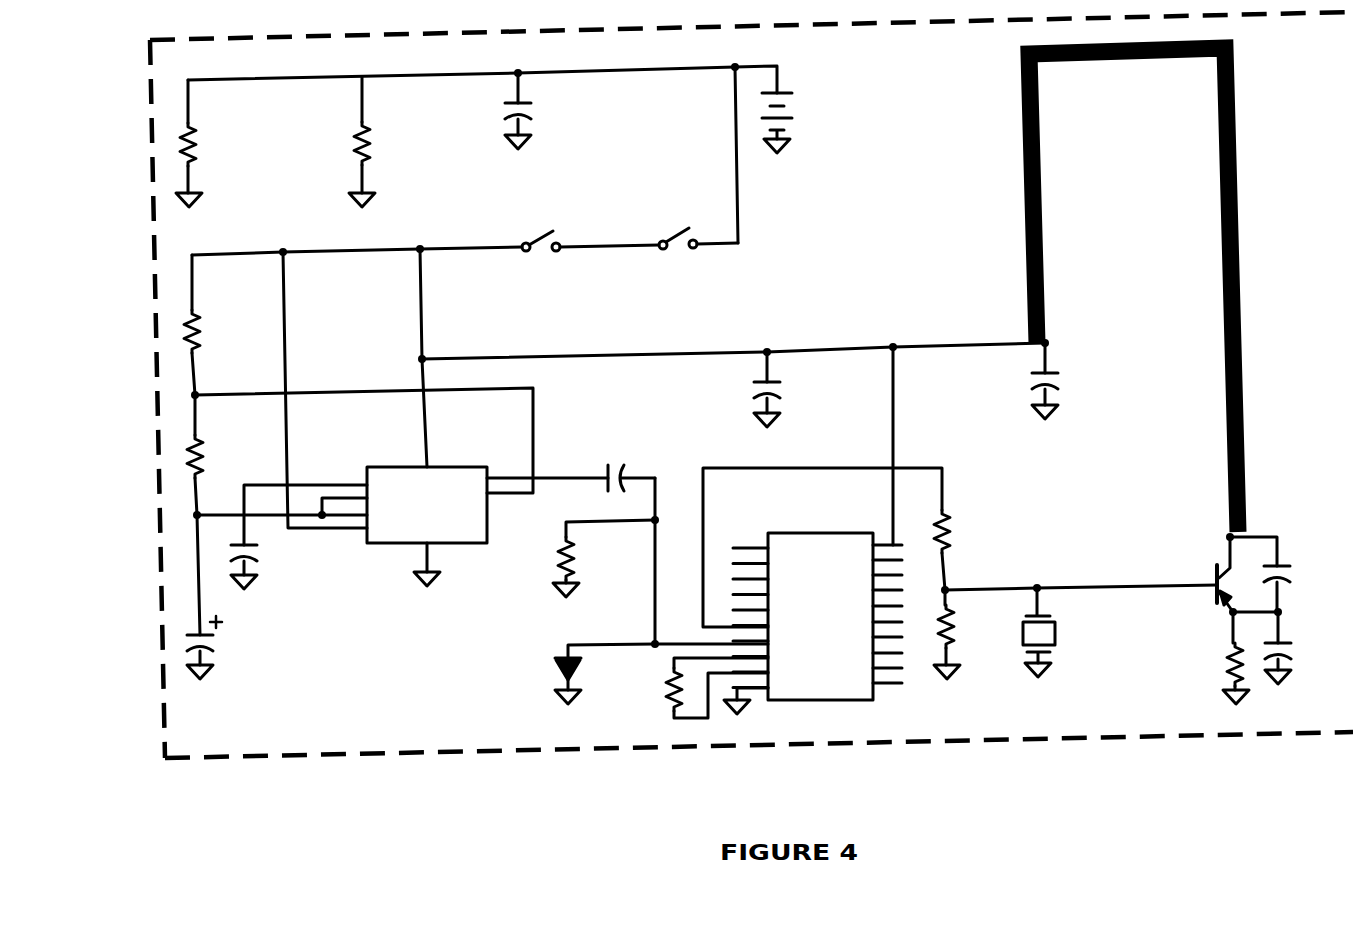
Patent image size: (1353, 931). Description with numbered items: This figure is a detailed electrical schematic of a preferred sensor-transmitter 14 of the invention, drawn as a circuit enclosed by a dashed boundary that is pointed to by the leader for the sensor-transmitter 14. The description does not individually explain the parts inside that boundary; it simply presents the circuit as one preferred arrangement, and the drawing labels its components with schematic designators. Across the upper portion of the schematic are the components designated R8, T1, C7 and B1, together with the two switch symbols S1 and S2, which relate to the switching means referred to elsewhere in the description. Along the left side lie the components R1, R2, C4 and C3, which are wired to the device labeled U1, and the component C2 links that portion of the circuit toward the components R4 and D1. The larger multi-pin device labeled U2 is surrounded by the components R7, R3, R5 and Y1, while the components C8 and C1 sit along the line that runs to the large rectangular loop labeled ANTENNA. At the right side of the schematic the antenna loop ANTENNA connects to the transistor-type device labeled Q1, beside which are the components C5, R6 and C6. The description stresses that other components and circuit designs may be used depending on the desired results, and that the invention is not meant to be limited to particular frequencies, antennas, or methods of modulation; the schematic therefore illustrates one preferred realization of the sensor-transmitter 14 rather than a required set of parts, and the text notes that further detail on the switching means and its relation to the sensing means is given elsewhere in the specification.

The sensor-transmitter 14 is at (945, 723).
The resistor R8 is at (213, 143).
The thermistor T1 is at (385, 142).
The capacitor C7 is at (493, 111).
The battery B1 is at (807, 123).
The switch S1 is at (541, 266).
The switch S2 is at (679, 260).
The resistor R1 is at (216, 329).
The resistor R2 is at (215, 449).
The capacitor C4 is at (268, 563).
The capacitor C3 is at (227, 647).
The integrated circuit U1 is at (427, 526).
The capacitor C2 is at (626, 458).
The resistor R4 is at (604, 558).
The diode D1 is at (580, 674).
The resistor R7 is at (696, 688).
The microcontroller U2 is at (813, 610).
The resistor R3 is at (966, 549).
The resistor R5 is at (967, 634).
The crystal Y1 is at (1062, 632).
The capacitor C8 is at (743, 389).
The capacitor C1 is at (1021, 381).
The antenna loop ANTENNA is at (1133, 290).
The transistor Q1 is at (1228, 569).
The capacitor C5 is at (1300, 582).
The resistor R6 is at (1212, 658).
The capacitor C6 is at (1305, 648).